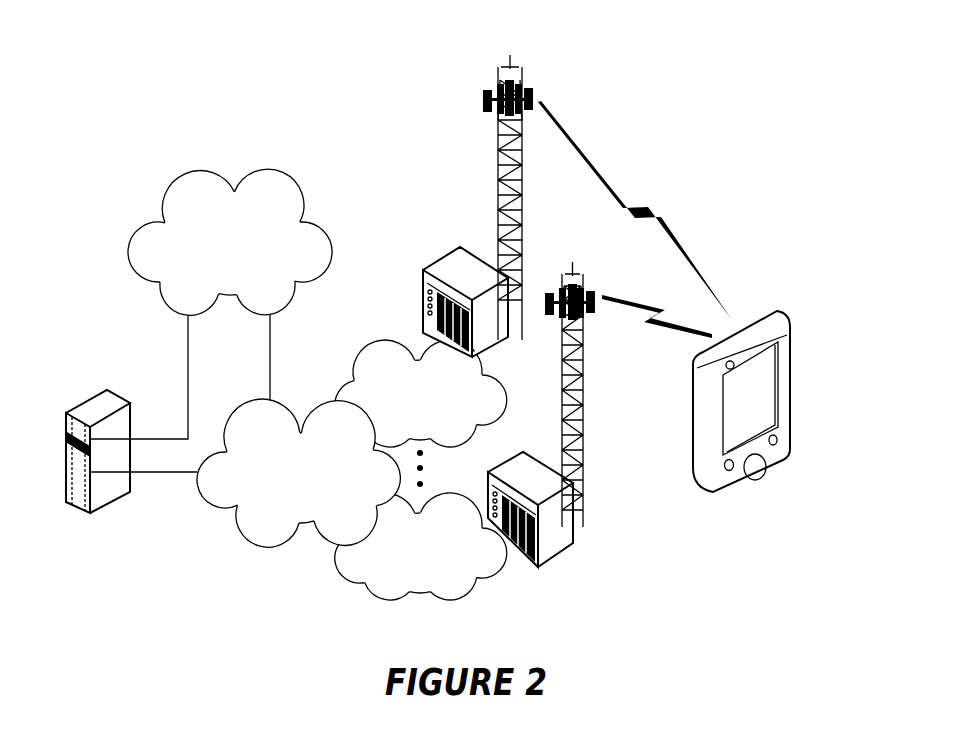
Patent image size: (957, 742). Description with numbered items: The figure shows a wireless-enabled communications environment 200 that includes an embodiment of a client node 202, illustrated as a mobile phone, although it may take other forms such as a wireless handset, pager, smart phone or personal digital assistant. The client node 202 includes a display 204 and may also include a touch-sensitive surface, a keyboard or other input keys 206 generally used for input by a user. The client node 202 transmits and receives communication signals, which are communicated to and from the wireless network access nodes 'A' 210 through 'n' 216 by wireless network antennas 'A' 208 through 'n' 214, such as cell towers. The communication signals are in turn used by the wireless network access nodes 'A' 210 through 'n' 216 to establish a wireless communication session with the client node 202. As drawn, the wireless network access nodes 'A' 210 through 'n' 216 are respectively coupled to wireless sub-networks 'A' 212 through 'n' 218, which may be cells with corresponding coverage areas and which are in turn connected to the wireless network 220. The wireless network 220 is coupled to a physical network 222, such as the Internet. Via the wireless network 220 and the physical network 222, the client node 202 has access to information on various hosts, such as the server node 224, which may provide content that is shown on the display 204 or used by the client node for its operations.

The wireless communication system 200 is at (270, 140).
The client node 202 is at (780, 436).
The display 204 is at (765, 382).
The input keys 206 is at (798, 385).
The wireless network antenna 'A' 208 is at (584, 480).
The wireless network access node 'A' 210 is at (542, 562).
The wireless sub-network 'A' 212 is at (421, 546).
The wireless network antenna 'n' 214 is at (498, 163).
The wireless network access node 'n' 216 is at (450, 253).
The wireless sub-network 'n' 218 is at (421, 393).
The wireless network 220 is at (298, 473).
The physical network 222 is at (230, 242).
The server node 224 is at (100, 513).